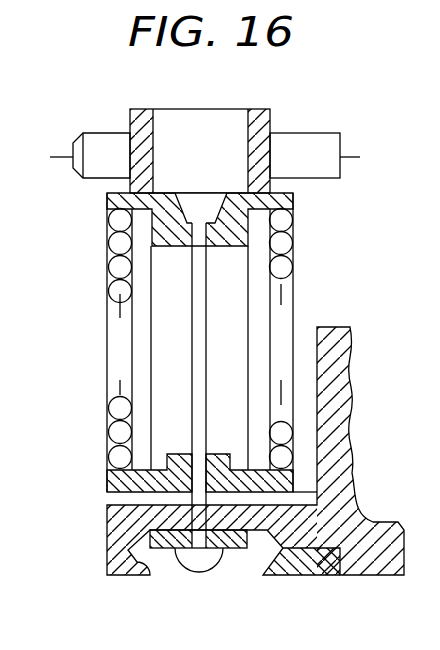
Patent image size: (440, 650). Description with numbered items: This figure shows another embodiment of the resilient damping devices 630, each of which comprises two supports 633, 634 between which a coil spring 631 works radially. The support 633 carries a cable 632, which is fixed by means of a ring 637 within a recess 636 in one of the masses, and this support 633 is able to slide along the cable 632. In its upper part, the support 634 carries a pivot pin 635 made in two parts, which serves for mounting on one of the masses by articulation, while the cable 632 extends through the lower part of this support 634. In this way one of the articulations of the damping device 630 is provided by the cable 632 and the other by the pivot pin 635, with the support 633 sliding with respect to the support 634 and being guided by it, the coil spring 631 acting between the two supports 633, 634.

The resilient damping device 630 is at (100, 331).
The coil spring 631 is at (284, 247).
The cable 632 is at (198, 372).
The support 633 is at (293, 196).
The support 634 is at (282, 484).
The pivot pin 635 is at (104, 137).
The recess 636 is at (153, 576).
The ring 637 is at (235, 550).